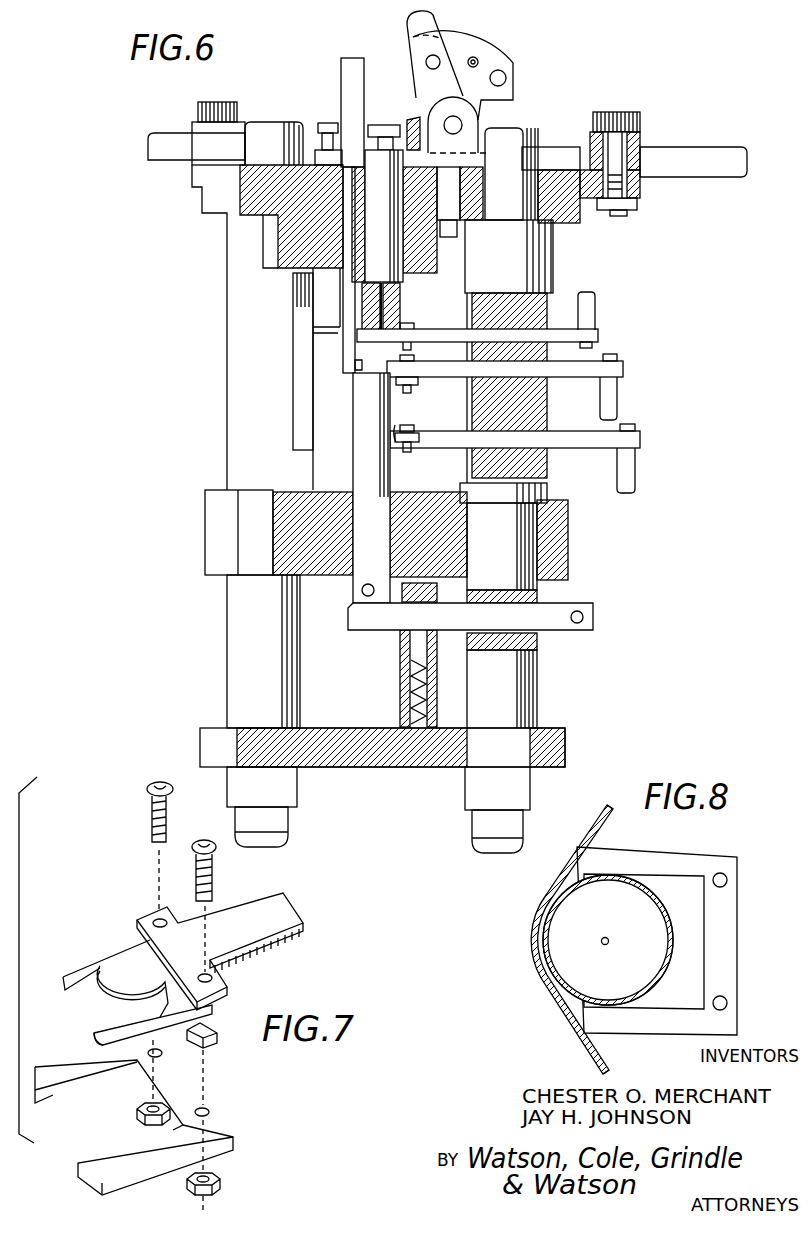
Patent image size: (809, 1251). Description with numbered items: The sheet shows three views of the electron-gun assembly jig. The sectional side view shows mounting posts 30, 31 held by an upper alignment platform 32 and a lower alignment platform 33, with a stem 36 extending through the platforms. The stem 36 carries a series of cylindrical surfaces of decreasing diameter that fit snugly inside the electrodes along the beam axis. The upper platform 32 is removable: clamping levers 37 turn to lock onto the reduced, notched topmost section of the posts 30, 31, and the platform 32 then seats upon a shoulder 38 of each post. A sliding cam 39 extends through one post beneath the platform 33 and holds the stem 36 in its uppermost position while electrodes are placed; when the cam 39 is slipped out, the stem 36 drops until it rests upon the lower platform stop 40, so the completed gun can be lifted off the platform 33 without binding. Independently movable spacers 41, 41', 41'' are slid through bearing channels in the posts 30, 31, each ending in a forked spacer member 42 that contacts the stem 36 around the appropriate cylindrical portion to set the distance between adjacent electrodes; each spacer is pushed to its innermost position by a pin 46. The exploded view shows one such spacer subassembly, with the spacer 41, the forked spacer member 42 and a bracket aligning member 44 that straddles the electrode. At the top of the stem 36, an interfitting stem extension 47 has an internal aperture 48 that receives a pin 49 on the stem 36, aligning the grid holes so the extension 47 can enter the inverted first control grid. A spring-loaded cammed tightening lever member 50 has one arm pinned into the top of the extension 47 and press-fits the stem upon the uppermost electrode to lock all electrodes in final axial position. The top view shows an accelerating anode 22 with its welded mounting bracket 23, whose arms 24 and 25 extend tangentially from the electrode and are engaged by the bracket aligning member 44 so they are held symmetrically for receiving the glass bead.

In FIG. 8, the accelerating anode 22 is at (655, 894).
In FIG. 8, the mounting bracket 23 is at (531, 945).
In FIG. 8, the arm 24 is at (601, 818).
In FIG. 8, the arm 25 is at (589, 1056).
In FIG. 6, the mounting post 30 is at (290, 834).
In FIG. 6, the mounting post 31 is at (468, 820).
In FIG. 6, the upper alignment platform 32 is at (192, 172).
In FIG. 6, the alignment platform 33 is at (205, 536).
In FIG. 6, the stem 36 is at (393, 471).
In FIG. 6, the lever 37 is at (745, 152).
In FIG. 6, the shoulder 38 is at (510, 222).
In FIG. 6, the sliding cam 39 is at (596, 617).
In FIG. 6, the lower platform stop 40 is at (345, 768).
In FIG. 6, the spacer 41 is at (537, 439).
In FIG. 7, the spacer 41 is at (243, 951).
In FIG. 6, the spacer 41' is at (523, 374).
In FIG. 6, the spacer 41'' is at (500, 333).
In FIG. 6, the forked spacer member 42 is at (406, 433).
In FIG. 7, the forked spacer member 42 is at (115, 955).
In FIG. 7, the bracket aligning member 44 is at (230, 1132).
In FIG. 8, the bracket aligning member 44 is at (651, 1035).
In FIG. 6, the pin 46 is at (628, 401).
In FIG. 6, the stem extension 47 is at (383, 125).
In FIG. 6, the internal aperture 48 is at (398, 296).
In FIG. 6, the pin 49 is at (392, 313).
In FIG. 6, the cammed tightening lever member 50 is at (440, 18).